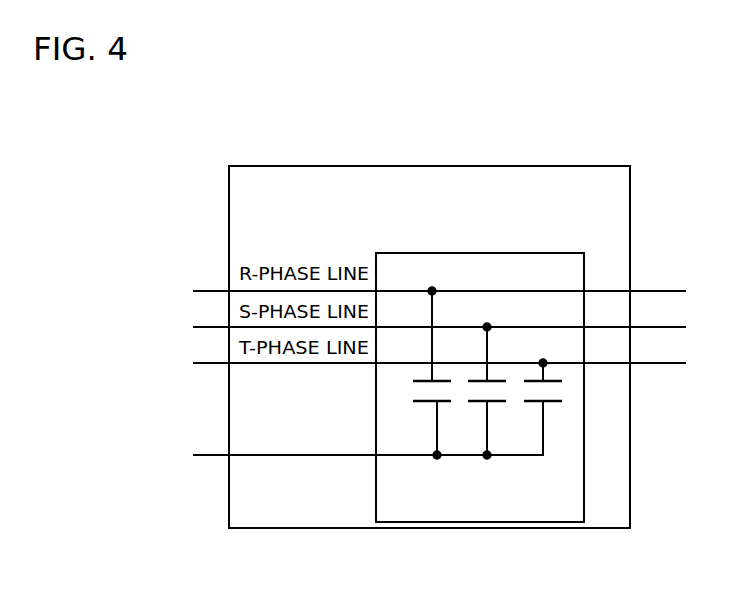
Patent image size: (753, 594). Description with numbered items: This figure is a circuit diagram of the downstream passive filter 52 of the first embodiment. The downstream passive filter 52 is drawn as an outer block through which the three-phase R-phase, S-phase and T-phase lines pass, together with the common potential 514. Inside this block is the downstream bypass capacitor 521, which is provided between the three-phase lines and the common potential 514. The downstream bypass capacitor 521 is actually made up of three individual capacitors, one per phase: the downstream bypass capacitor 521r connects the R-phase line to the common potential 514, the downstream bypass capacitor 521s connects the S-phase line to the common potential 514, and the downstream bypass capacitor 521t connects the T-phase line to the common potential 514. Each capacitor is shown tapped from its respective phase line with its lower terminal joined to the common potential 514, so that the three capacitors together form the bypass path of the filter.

The downstream passive filter 52 is at (298, 164).
The downstream bypass capacitor 521 is at (430, 248).
The downstream bypass capacitor 521r is at (420, 404).
The downstream bypass capacitor 521s is at (477, 403).
The downstream bypass capacitor 521t is at (533, 403).
The common potential 514 is at (317, 458).